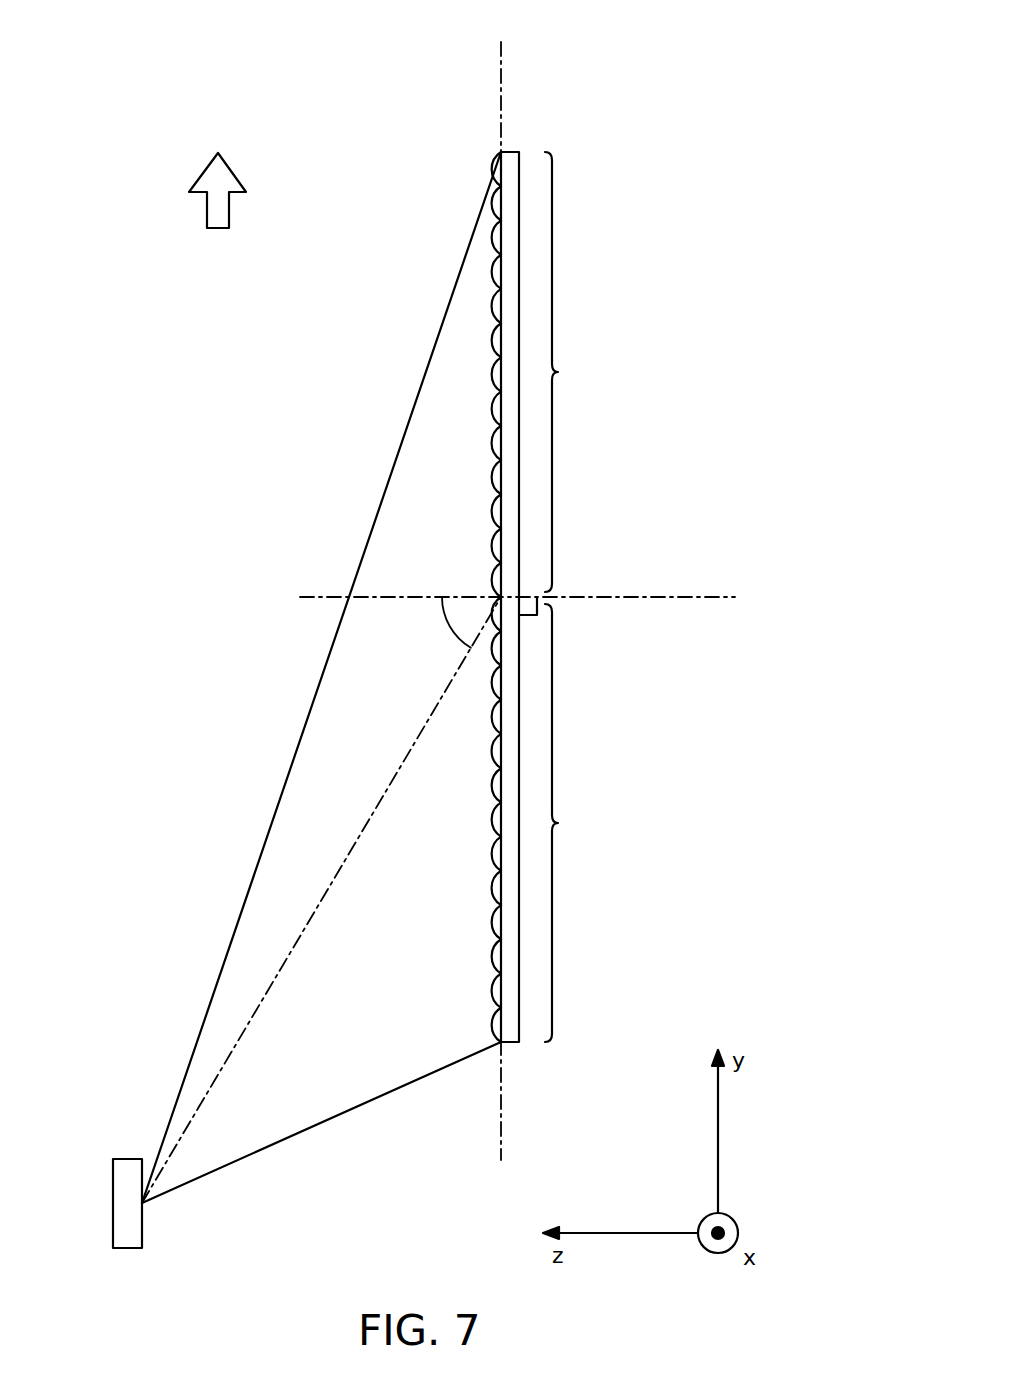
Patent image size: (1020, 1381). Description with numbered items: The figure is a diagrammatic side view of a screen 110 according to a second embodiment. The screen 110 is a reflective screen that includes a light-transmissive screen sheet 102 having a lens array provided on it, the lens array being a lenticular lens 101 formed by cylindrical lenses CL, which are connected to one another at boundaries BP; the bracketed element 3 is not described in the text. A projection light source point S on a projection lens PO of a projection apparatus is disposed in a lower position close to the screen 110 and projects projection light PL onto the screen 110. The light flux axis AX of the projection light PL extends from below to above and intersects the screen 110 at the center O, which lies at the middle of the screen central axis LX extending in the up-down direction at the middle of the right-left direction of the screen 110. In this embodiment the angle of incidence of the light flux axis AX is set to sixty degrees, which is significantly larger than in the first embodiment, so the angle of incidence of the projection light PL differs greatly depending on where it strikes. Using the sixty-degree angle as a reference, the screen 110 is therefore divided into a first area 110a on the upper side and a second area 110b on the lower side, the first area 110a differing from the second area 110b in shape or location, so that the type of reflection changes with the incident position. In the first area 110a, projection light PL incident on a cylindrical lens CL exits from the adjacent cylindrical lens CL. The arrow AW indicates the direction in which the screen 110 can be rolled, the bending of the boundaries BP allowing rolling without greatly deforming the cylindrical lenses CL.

The screen 110 is at (525, 546).
The first area 110a is at (587, 372).
The second area 110b is at (587, 823).
The lenticular lens 101 is at (495, 162).
The screen sheet 102 is at (512, 143).
The light guide plate 3 is at (555, 546).
The boundaries BP is at (493, 237).
The cylindrical lenses CL is at (493, 957).
The screen central axis LX is at (505, 58).
The light flux axis AX is at (387, 790).
The center O is at (503, 594).
The projection light source point S is at (145, 1205).
The projection lens PO is at (122, 1250).
The projection light PL is at (207, 1022).
The arrow AW is at (207, 210).